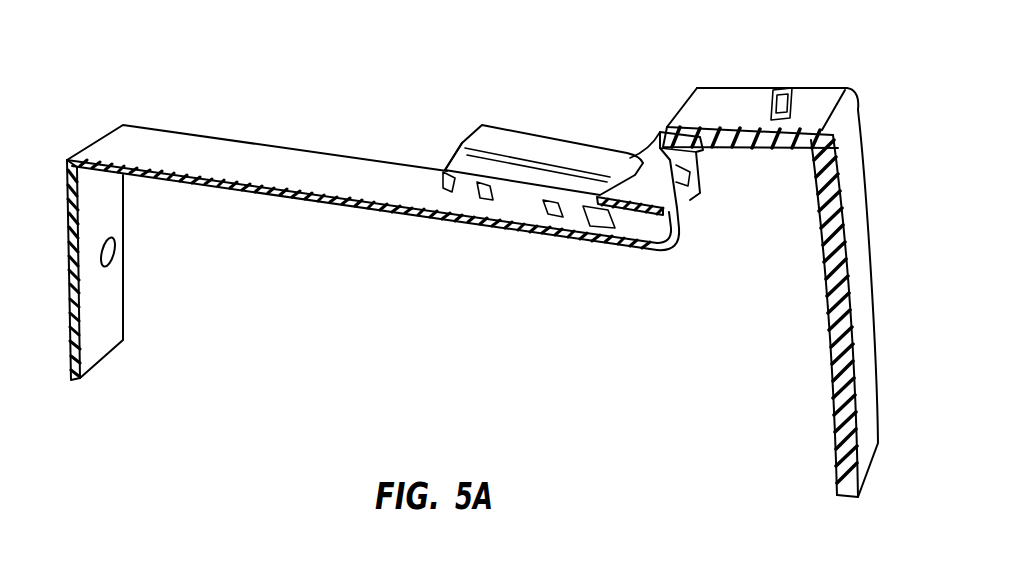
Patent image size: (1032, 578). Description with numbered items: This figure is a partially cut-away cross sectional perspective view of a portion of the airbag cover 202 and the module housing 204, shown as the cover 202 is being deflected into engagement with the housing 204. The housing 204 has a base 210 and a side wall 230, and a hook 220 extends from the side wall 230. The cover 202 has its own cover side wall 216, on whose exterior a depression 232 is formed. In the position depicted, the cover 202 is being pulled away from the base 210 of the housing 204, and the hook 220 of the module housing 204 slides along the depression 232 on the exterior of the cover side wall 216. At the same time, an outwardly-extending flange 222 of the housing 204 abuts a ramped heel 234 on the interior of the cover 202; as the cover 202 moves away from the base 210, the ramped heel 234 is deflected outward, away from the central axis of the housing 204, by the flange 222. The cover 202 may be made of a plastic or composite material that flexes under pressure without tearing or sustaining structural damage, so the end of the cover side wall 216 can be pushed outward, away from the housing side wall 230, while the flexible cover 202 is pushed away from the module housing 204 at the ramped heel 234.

The airbag cover 202 is at (877, 232).
The module housing 204 is at (104, 124).
The base 210 is at (115, 315).
The cover side wall 216 is at (499, 132).
The hook 220 is at (647, 190).
The flange 222 is at (698, 198).
The side wall 230 is at (305, 155).
The depression 232 is at (535, 180).
The ramped heel 234 is at (683, 173).